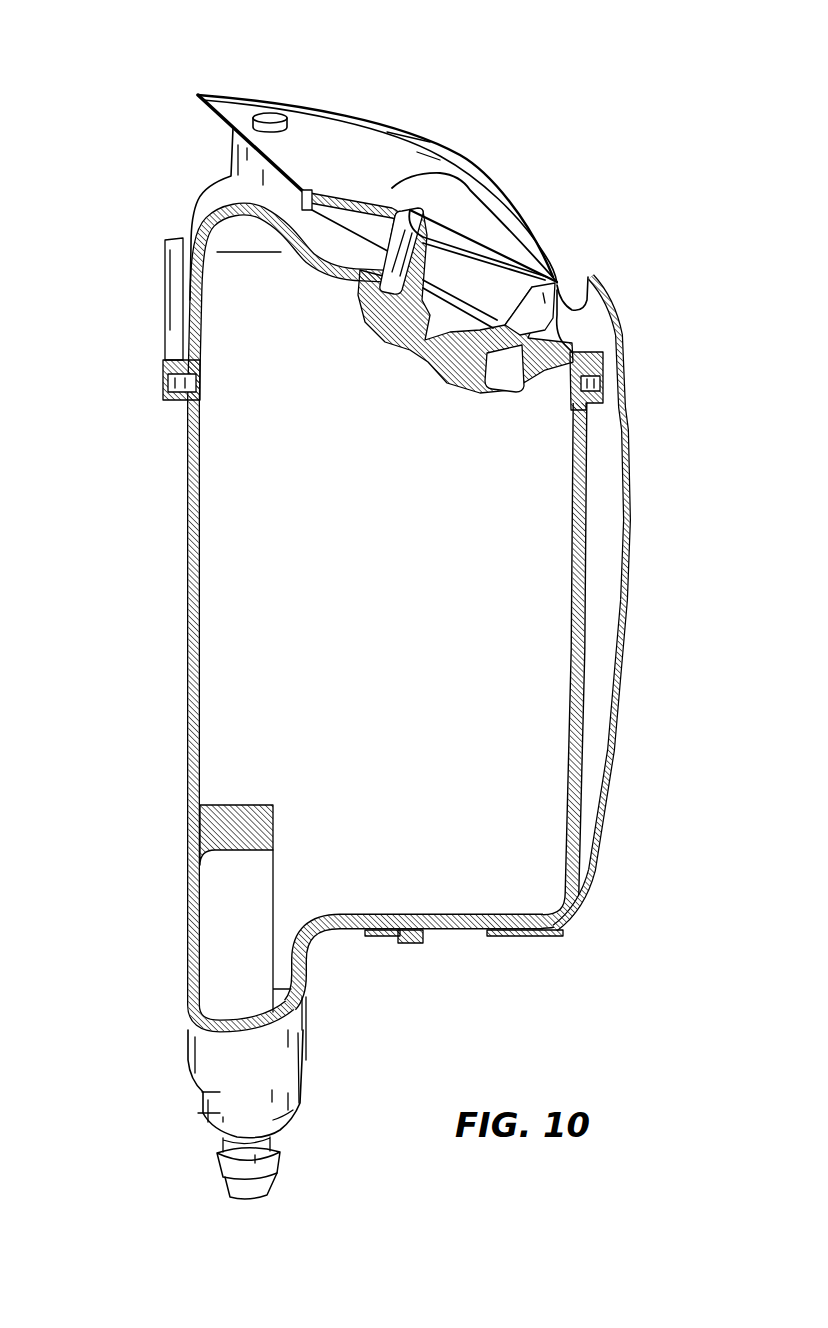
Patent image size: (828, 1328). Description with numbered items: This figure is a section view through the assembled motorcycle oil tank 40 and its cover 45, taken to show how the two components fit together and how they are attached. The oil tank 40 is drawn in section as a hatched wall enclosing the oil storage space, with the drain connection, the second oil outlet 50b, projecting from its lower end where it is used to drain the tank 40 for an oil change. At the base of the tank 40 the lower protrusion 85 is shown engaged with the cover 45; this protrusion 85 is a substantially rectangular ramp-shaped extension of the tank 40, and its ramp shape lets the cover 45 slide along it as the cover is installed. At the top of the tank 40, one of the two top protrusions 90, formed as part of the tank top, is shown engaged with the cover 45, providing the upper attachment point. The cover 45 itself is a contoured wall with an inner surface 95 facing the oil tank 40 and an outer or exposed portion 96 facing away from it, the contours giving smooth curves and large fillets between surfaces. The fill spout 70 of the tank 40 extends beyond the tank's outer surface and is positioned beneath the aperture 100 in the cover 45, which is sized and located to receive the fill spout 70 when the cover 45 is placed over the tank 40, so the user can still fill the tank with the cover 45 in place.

The oil tank 40 is at (190, 776).
The cover 45 is at (348, 124).
The second oil outlet 50b is at (203, 1113).
The fill spout 70 is at (522, 272).
The lower protrusion 85 is at (423, 942).
The top protrusions 90 is at (270, 113).
The inner surface 95 is at (624, 602).
The outer or exposed portion 96 is at (632, 556).
The aperture 100 is at (500, 193).